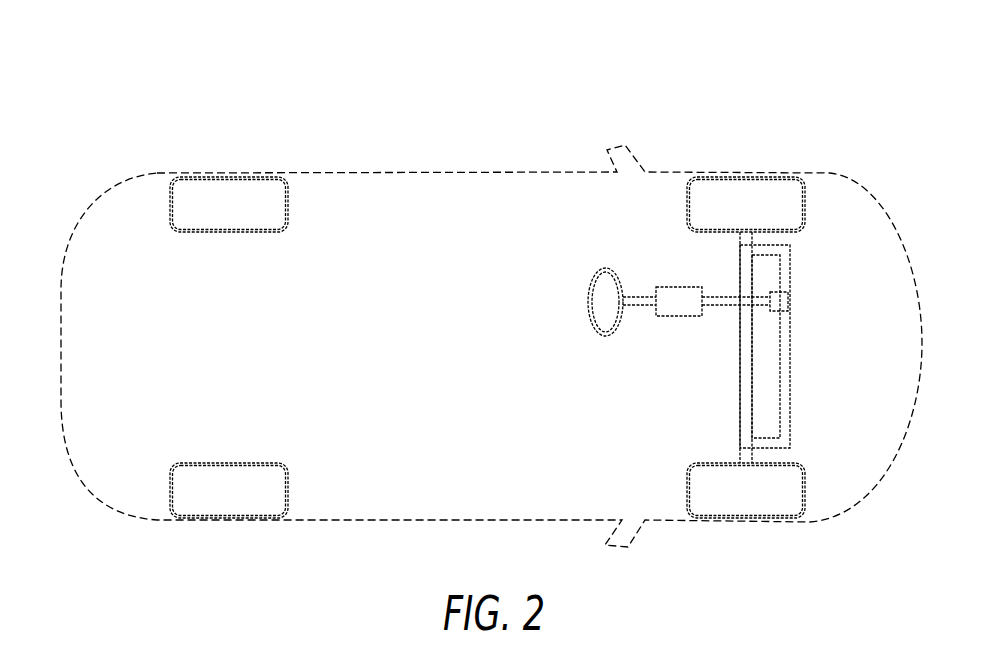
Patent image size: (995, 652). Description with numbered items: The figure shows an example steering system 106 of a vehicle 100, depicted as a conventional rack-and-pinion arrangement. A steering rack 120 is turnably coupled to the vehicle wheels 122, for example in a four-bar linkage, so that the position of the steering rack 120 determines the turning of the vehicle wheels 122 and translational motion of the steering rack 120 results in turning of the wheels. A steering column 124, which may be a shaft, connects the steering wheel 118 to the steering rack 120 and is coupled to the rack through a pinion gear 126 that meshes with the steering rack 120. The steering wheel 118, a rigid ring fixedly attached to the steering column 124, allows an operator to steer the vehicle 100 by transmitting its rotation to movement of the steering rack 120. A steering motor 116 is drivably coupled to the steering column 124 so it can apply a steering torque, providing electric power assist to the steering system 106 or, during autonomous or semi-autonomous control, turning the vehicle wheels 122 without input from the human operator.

The vehicle 100 is at (140, 95).
The steering system 106 is at (706, 130).
The steering motor 116 is at (660, 287).
The steering wheel 118 is at (588, 286).
The steering rack 120 is at (790, 360).
The vehicle wheels 122 is at (254, 186).
The steering column 124 is at (720, 307).
The pinion gear 126 is at (788, 301).